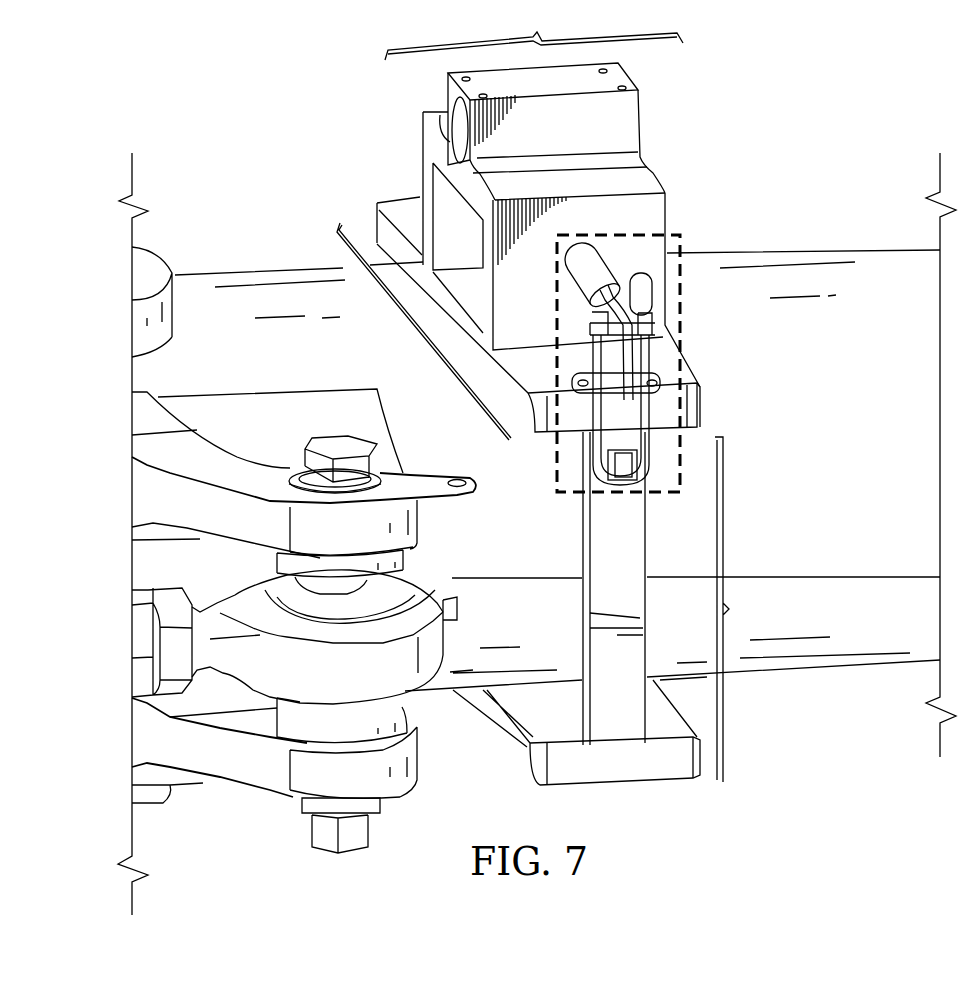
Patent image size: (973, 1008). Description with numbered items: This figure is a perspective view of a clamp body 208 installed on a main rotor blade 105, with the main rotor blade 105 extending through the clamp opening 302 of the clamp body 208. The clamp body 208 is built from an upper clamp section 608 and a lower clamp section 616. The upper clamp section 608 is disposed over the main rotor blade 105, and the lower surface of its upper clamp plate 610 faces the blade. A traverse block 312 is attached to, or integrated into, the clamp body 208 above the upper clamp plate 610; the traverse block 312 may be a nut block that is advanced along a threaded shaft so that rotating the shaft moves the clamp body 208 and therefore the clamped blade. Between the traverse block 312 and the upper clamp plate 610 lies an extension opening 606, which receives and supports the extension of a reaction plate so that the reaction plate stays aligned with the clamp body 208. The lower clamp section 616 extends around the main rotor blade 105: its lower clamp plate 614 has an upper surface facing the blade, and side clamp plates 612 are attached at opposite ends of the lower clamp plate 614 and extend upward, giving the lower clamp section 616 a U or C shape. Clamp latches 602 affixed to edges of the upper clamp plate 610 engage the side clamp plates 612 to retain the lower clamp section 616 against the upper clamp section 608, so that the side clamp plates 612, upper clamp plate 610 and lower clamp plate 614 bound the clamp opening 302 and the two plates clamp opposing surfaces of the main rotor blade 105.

The main rotor blade 105 is at (873, 263).
The clamp body 208 is at (550, 424).
The clamp opening 302 is at (547, 716).
The traverse block 312 is at (640, 123).
The clamp latch 602 is at (680, 322).
The extension opening 606 is at (460, 231).
The upper clamp section 608 is at (423, 340).
The upper clamp plate 610 is at (700, 407).
The side clamp plate 612 is at (583, 535).
The lower clamp plate 614 is at (650, 787).
The lower clamp section 616 is at (748, 609).